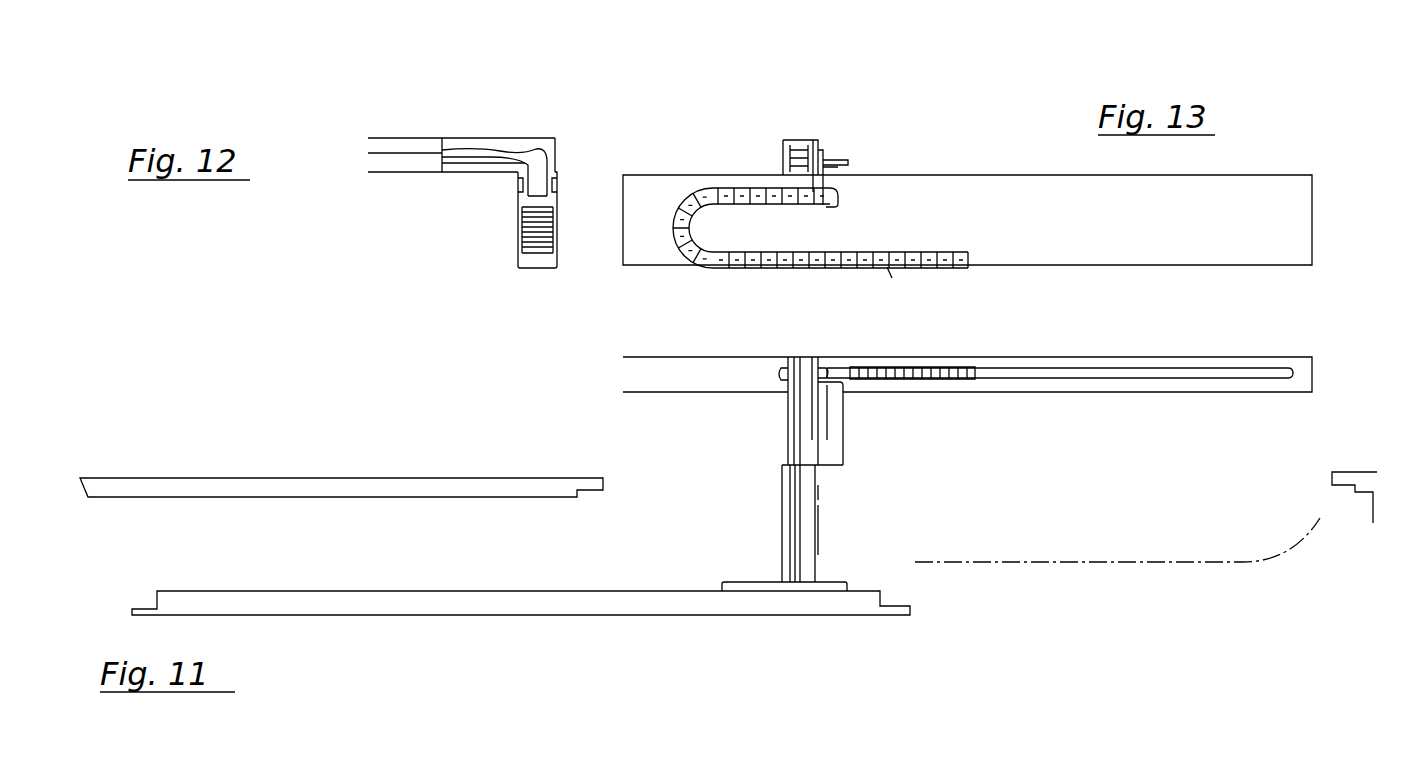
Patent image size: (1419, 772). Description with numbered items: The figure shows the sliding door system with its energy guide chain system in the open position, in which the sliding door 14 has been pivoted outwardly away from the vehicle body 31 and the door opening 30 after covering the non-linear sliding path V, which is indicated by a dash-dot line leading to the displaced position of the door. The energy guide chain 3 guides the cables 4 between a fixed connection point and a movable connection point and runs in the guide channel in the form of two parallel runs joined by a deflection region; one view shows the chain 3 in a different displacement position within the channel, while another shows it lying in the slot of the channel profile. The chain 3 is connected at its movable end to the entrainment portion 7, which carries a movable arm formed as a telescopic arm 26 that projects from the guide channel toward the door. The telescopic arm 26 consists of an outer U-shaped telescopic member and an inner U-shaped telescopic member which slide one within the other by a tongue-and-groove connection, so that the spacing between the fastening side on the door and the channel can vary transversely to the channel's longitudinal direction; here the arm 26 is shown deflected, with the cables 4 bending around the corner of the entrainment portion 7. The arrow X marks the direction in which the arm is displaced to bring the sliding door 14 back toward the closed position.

In FIG. 11, the energy guide chain 3 is at (878, 368).
In FIG. 12, the cables 4 is at (553, 152).
In FIG. 12, the entrainment portion 7 is at (531, 112).
In FIG. 13, the entrainment portion 7 is at (850, 145).
In FIG. 11, the sliding door 14 is at (462, 612).
In FIG. 12, the telescopic arm 26 is at (454, 130).
In FIG. 11, the telescopic arm 26 is at (848, 448).
In FIG. 11, the door opening 30 is at (643, 480).
In FIG. 11, the vehicle body 31 is at (128, 485).
In FIG. 11, the X-direction X is at (834, 520).
In FIG. 11, the sliding path V is at (1117, 562).